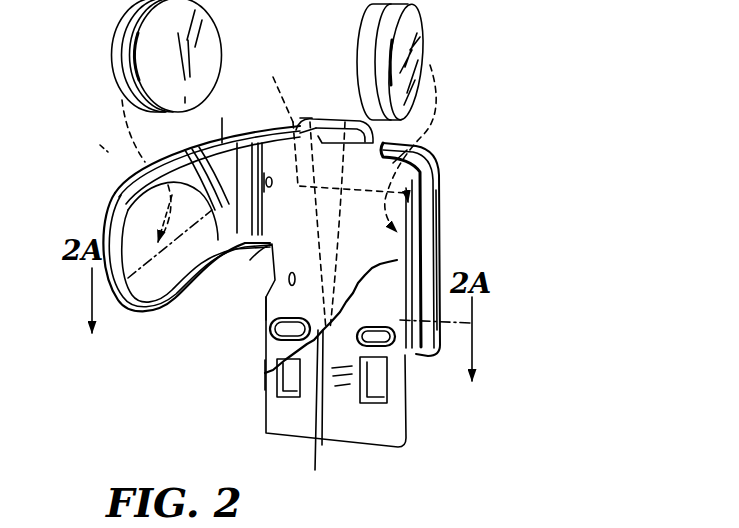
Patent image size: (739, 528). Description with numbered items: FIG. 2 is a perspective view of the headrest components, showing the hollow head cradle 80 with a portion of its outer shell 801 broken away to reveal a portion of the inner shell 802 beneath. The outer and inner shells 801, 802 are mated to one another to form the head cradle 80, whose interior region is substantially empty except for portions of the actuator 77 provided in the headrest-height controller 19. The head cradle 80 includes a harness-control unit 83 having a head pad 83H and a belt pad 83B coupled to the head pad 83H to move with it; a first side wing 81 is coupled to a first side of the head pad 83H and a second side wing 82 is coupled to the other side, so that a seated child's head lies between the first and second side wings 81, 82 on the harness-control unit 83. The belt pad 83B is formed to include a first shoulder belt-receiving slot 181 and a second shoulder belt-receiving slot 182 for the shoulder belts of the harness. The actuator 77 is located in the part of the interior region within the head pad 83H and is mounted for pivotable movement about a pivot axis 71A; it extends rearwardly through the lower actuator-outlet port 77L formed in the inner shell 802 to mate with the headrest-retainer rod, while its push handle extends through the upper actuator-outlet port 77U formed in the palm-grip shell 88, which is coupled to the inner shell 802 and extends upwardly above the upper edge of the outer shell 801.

The headrest-height controller 19 is at (333, 122).
The pivot axis 71A is at (266, 87).
The actuator 77 is at (348, 203).
The upper actuator-outlet port 77U is at (313, 125).
The lower actuator-outlet port 77L is at (324, 415).
The head cradle 80 is at (455, 172).
The first side wing 81 is at (447, 236).
The second side wing 82 is at (120, 191).
The harness-control unit 83 is at (284, 311).
The belt pad 83B is at (262, 380).
The head pad 83H is at (290, 215).
The palm-grip shell 88 is at (333, 135).
The first shoulder belt-receiving slot 181 is at (397, 352).
The second shoulder belt-receiving slot 182 is at (277, 338).
The outer shell 801 is at (293, 246).
The inner shell 802 is at (425, 262).